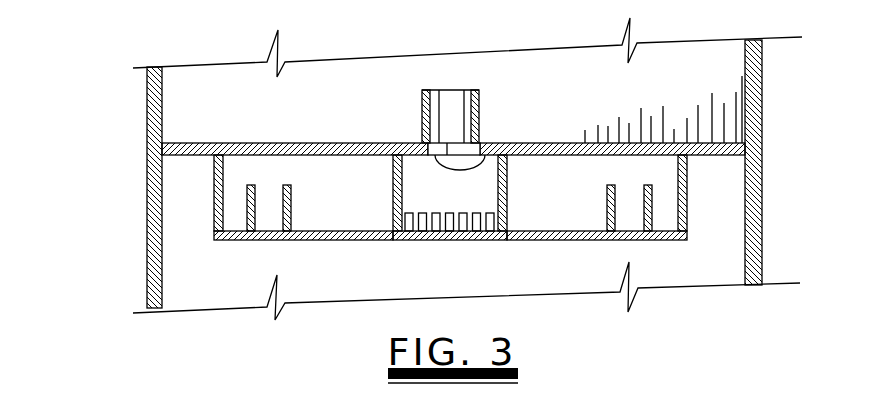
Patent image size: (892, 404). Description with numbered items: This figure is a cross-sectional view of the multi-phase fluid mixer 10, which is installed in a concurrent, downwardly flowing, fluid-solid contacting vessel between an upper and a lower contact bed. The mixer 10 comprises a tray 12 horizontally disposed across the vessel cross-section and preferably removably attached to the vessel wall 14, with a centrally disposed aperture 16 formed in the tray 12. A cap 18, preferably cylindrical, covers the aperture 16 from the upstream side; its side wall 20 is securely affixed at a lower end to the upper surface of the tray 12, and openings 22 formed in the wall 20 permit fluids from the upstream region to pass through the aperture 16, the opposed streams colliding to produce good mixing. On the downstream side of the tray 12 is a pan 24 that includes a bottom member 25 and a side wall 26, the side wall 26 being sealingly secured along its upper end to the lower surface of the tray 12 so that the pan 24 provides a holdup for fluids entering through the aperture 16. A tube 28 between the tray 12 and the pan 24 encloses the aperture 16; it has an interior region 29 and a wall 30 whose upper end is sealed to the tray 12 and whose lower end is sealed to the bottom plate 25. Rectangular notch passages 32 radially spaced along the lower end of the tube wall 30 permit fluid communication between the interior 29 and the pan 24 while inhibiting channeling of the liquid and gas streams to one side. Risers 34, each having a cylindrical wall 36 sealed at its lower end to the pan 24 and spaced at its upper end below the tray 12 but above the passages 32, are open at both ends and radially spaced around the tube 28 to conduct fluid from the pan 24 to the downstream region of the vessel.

The mixer 10 is at (122, 239).
The tray 12 is at (213, 144).
The vessel wall 14 is at (760, 236).
The aperture 16 is at (480, 157).
The cap 18 is at (429, 76).
The side wall 20 is at (430, 110).
The openings 22 is at (450, 100).
The pan 24 is at (475, 218).
The bottom member 25 is at (668, 240).
The side wall 26 is at (687, 205).
The tube 28 is at (393, 173).
The interior region 29 is at (423, 188).
The tube wall 30 is at (508, 193).
The passages 32 is at (439, 222).
The risers 34 is at (265, 208).
The cylindrical wall 36 is at (247, 200).